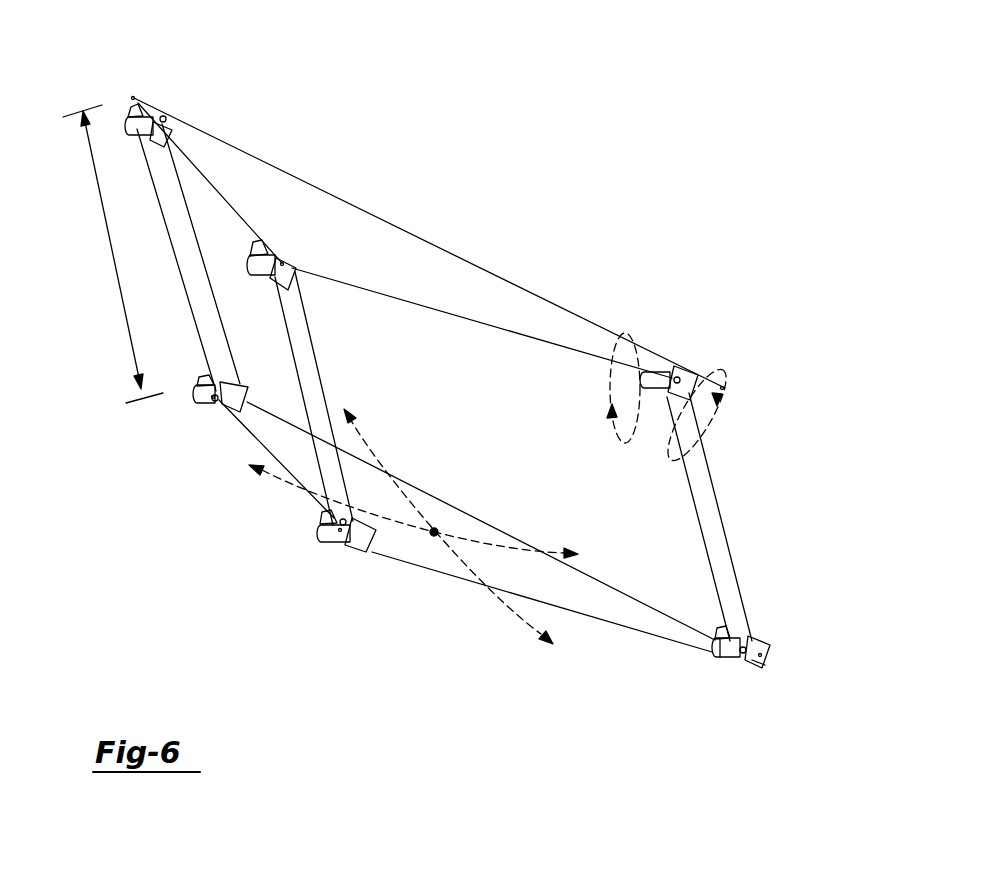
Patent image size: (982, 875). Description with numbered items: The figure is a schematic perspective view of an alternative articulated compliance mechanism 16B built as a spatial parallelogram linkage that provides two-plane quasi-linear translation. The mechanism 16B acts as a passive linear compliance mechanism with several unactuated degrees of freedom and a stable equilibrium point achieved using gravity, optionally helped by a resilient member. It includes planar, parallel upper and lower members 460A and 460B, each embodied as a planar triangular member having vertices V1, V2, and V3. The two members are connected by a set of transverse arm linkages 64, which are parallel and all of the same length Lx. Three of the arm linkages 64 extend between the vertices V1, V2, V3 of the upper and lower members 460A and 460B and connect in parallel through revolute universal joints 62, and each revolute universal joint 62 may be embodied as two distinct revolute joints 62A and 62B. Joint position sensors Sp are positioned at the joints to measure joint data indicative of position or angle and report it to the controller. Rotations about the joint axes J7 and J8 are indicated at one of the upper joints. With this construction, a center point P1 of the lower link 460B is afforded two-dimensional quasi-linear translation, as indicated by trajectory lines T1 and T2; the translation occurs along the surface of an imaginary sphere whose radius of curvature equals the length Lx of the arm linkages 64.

The articulated compliance mechanism 16B is at (645, 188).
The revolute universal joint 62 is at (95, 90).
The revolute joint 62A is at (711, 648).
The revolute joint 62B is at (746, 674).
The arm linkage 64 is at (173, 243).
The upper member 460A is at (367, 235).
The lower member 460B is at (462, 522).
The vertex V1 is at (135, 96).
The vertex V2 is at (724, 392).
The vertex V3 is at (272, 280).
The joint position sensor Sp is at (167, 114).
The length of the arm linkages Lx is at (113, 254).
The rotational joint axis J7 is at (611, 370).
The rotational joint axis J8 is at (700, 440).
The trajectory line T1 is at (378, 458).
The trajectory line T2 is at (500, 545).
The center point P1 is at (435, 528).